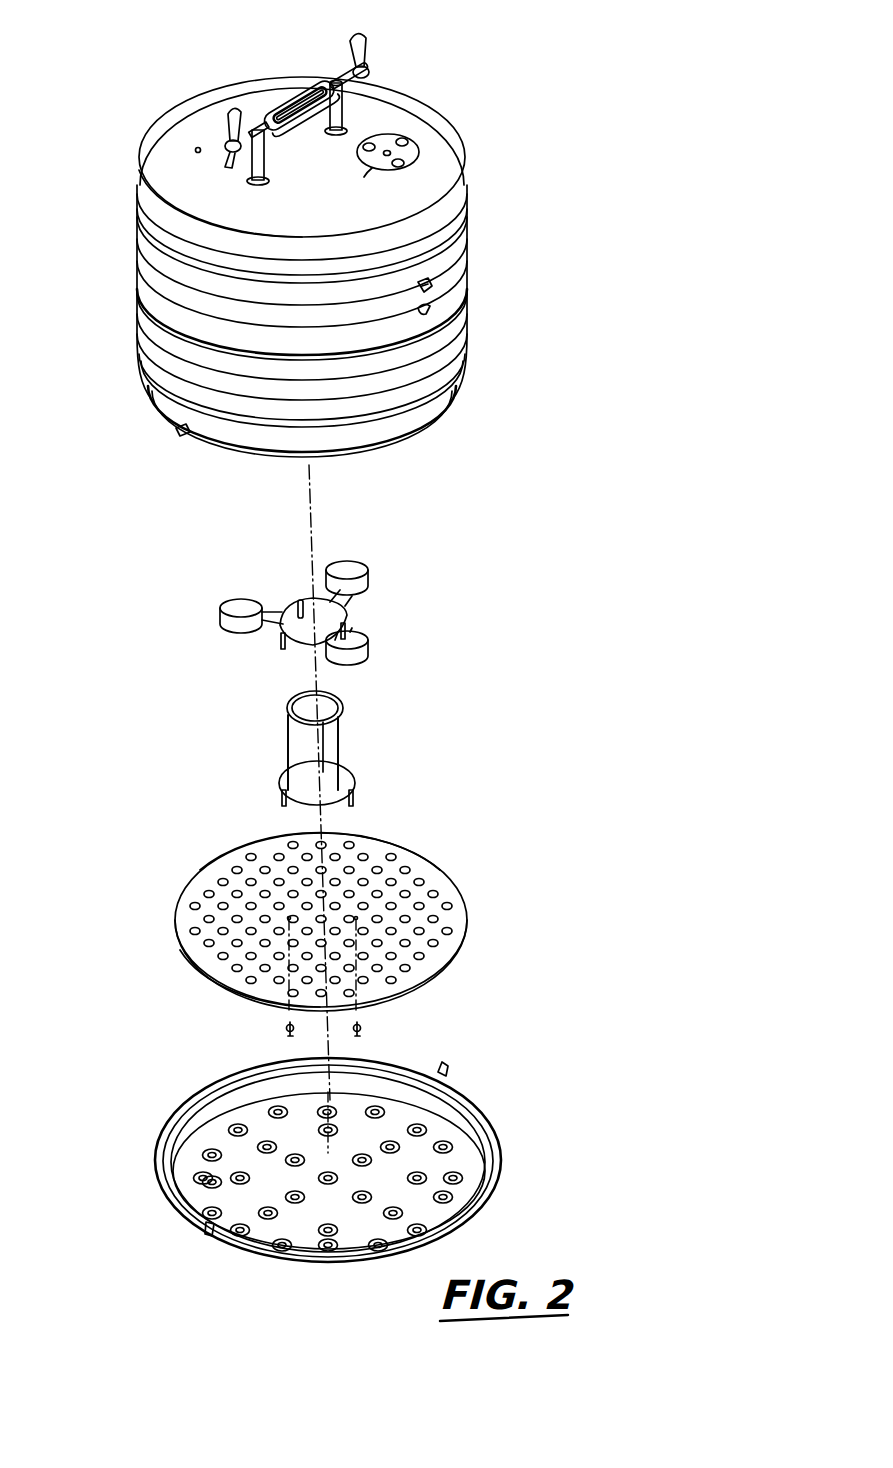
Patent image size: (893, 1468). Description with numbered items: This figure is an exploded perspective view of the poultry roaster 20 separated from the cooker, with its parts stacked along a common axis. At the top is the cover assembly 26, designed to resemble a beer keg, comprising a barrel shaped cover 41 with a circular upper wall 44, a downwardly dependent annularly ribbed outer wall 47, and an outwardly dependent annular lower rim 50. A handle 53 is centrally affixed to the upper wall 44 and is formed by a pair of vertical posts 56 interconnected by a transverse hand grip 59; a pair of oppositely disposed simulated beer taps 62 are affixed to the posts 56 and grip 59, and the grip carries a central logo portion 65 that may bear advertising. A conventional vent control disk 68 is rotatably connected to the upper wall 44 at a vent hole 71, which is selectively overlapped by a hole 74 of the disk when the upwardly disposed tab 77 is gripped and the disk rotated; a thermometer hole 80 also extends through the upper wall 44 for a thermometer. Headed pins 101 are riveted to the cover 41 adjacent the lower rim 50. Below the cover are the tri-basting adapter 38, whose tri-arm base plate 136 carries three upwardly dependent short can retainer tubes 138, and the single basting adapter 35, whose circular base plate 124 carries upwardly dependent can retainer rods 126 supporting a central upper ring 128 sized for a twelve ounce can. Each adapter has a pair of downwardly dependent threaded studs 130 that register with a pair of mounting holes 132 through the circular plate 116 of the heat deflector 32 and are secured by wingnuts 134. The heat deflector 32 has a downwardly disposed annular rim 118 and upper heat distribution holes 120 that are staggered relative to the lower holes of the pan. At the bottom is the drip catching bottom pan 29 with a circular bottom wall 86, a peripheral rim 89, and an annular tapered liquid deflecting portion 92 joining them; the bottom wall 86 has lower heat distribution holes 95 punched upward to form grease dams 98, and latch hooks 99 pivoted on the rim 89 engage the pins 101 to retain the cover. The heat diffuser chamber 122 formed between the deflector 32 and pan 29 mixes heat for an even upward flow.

The poultry roaster 20 is at (500, 78).
The cover assembly 26 is at (125, 222).
The bottom pan 29 is at (506, 1194).
The heat deflector 32 is at (462, 858).
The single basting adapter 35 is at (362, 728).
The tri-basting adapter 38 is at (398, 600).
The barrel shaped cover 41 is at (128, 290).
The circular upper wall 44 is at (382, 112).
The annularly ribbed outer wall 47 is at (432, 309).
The annular lower rim 50 is at (456, 402).
The handle 53 is at (195, 95).
The vertical posts 56 is at (266, 150).
The transverse hand grip 59 is at (305, 78).
The simulated beer taps 62 is at (228, 146).
The central logo portion 65 is at (290, 100).
The vent control disk 68 is at (410, 163).
The vent hole 71 is at (405, 139).
The hole of the disk 74 is at (410, 155).
The tab 77 is at (364, 177).
The thermometer hole 80 is at (195, 150).
The bottom wall 86 is at (302, 1232).
The peripheral rim 89 is at (165, 1135).
The liquid deflecting portion 92 is at (464, 1132).
The lower heat distribution holes 95 is at (205, 1180).
The grease dams 98 is at (400, 1213).
The latch hooks 99 is at (450, 1070).
The headed pins 101 is at (432, 283).
The circular plate 116 is at (238, 858).
The annular rim 118 is at (466, 944).
The upper heat distribution holes 120 is at (250, 903).
The heat diffuser chamber 122 is at (205, 1000).
The circular base plate 124 is at (345, 780).
The can retainer rods 126 is at (330, 762).
The upper ring 128 is at (288, 705).
The threaded studs 130 is at (348, 632).
The mounting holes 132 is at (358, 918).
The wingnuts 134 is at (362, 1028).
The tri-arm base plate 136 is at (298, 603).
The can retainer tubes 138 is at (365, 572).